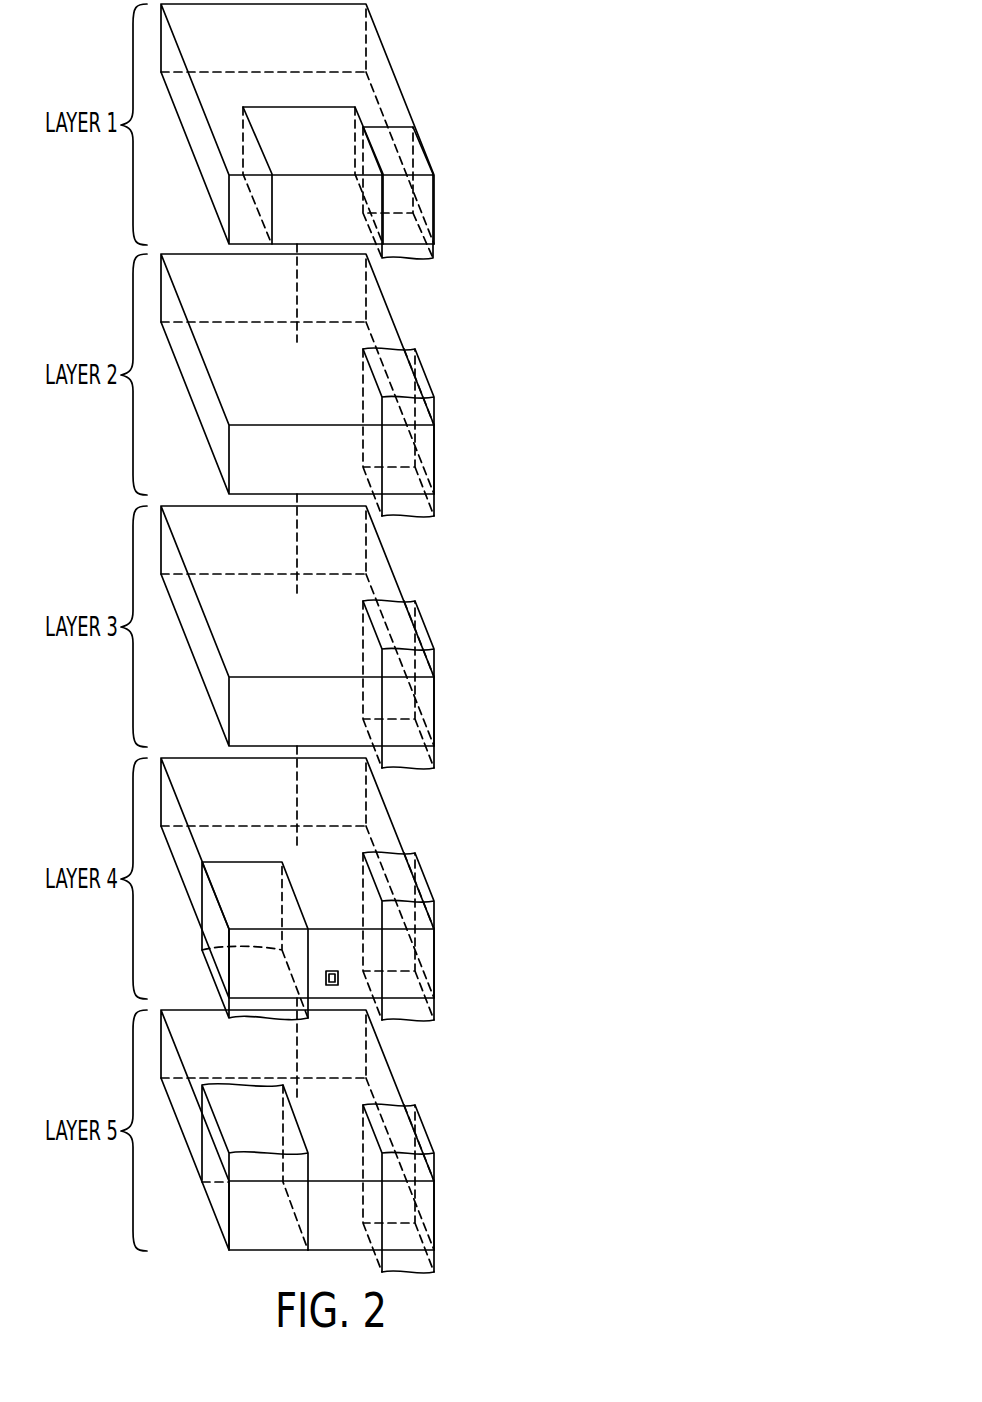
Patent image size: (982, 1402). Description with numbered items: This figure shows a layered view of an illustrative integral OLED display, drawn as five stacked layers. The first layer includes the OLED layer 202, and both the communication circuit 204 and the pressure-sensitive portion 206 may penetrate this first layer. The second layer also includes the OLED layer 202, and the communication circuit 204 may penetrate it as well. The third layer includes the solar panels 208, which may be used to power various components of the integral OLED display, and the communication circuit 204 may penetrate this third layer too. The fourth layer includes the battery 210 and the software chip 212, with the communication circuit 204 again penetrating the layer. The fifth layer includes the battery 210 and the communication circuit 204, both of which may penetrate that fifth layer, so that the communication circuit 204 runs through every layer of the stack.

The OLED layer 202 is at (460, 270).
The communication circuit 204 is at (460, 1160).
The pressure-sensitive portion 206 is at (337, 147).
The solar panels 208 is at (345, 555).
The battery 210 is at (460, 1133).
The software chip 212 is at (338, 978).